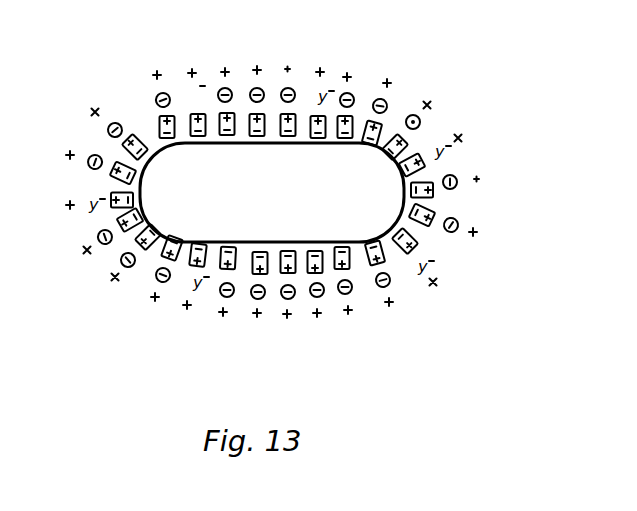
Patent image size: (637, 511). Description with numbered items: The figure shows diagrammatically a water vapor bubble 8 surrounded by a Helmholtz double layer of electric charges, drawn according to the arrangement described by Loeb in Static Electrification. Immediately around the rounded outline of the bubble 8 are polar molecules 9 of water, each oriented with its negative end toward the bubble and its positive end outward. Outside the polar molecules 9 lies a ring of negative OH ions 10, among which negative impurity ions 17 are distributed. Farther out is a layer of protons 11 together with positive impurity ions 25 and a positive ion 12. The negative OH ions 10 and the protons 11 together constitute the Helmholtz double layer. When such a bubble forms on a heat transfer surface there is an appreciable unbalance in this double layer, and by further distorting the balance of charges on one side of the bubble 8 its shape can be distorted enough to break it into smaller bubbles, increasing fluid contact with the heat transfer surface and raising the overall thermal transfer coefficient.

The water vapor bubble 8 is at (273, 192).
The polar molecule of water 9 is at (353, 126).
The negative OH ion 10 is at (390, 107).
The proton 11 is at (324, 68).
The positive ion 12 is at (283, 68).
The negative impurity ion 17 is at (200, 82).
The positive impurity ion 25 is at (478, 178).